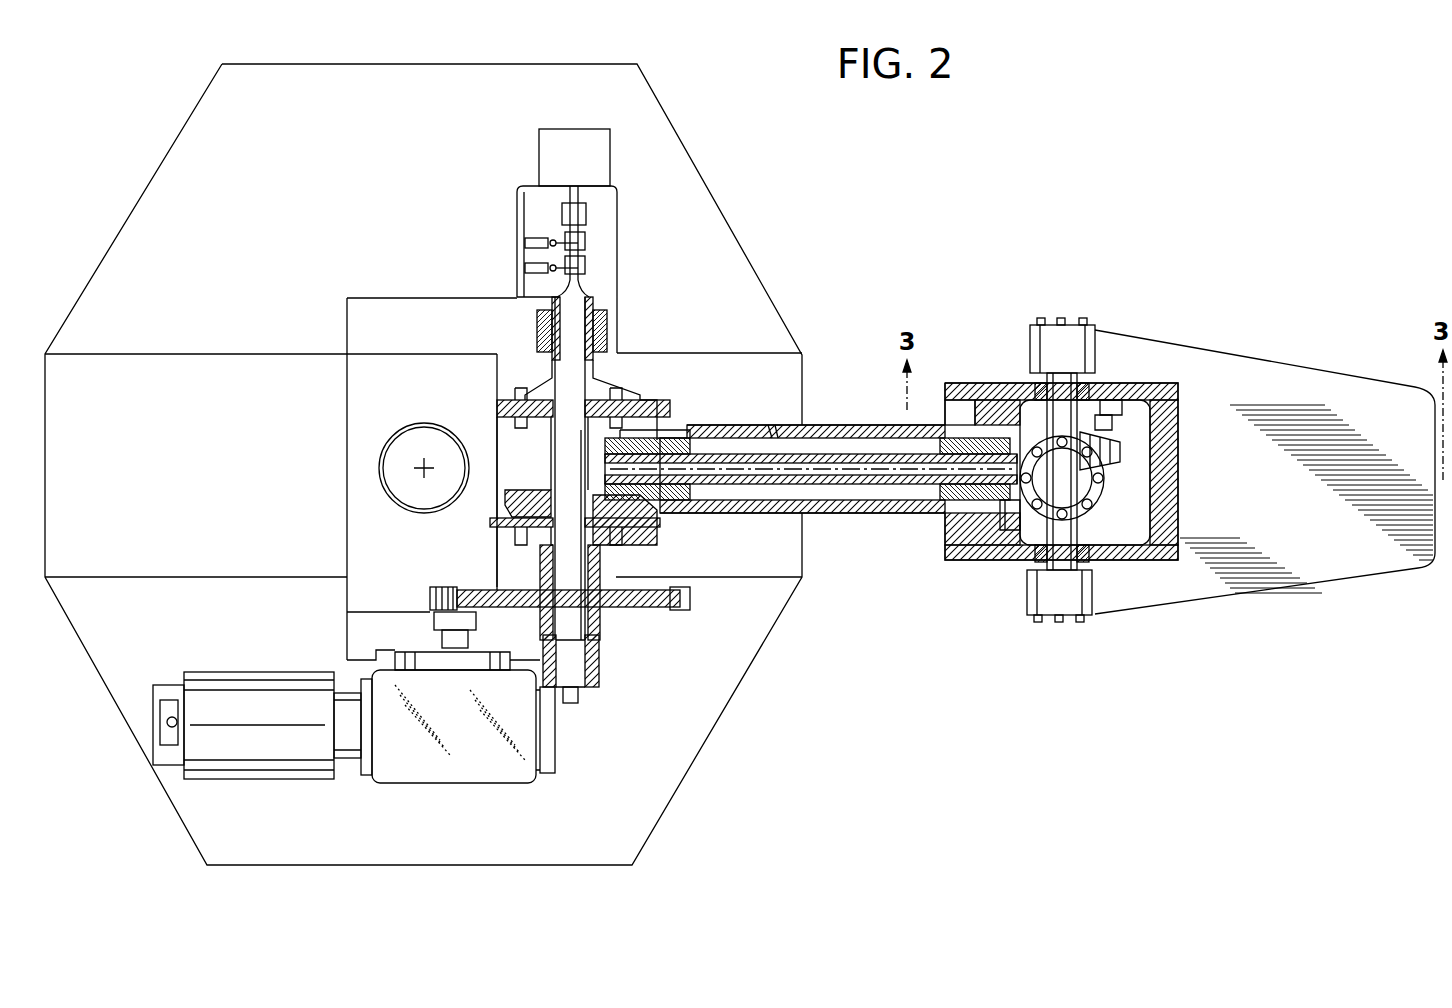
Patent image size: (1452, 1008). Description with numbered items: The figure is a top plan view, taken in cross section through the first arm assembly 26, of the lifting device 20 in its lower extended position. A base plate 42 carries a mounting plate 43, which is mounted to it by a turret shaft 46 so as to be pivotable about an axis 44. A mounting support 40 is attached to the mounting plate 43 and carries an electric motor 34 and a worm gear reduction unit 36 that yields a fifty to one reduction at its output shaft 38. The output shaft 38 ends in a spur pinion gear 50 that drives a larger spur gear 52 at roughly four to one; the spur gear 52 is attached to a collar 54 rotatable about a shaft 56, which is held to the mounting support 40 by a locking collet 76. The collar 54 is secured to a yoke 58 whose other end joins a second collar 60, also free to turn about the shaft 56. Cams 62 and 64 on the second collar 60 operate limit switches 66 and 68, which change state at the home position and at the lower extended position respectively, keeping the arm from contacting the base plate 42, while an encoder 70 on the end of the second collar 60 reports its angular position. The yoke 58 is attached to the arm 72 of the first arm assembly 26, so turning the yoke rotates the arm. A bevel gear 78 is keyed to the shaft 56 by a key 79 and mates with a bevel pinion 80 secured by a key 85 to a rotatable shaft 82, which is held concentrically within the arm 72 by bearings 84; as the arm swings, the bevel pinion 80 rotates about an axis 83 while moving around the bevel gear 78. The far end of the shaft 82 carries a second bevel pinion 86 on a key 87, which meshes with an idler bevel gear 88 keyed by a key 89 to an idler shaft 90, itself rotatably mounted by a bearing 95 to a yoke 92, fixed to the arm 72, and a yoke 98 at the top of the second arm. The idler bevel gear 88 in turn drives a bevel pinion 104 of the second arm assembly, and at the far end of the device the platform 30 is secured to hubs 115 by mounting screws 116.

The lifting device 20 is at (1085, 305).
The first arm assembly 26 is at (845, 425).
The platform 30 is at (1292, 382).
The electric motor 34 is at (232, 690).
The worm gear reduction unit 36 is at (528, 780).
The output shaft 38 is at (470, 631).
The mounting support 40 is at (352, 637).
The base plate 42 is at (462, 848).
The mounting plate 43 is at (350, 447).
The axis 44 is at (421, 464).
The turret shaft 46 is at (440, 432).
The spur pinion gear 50 is at (440, 588).
The spur gear 52 is at (676, 610).
The collar 54 is at (510, 562).
The shaft 56 is at (592, 550).
The yoke 58 is at (645, 540).
The second collar 60 is at (617, 362).
The cam 62 is at (588, 265).
The cam 64 is at (588, 241).
The limit switch 66 is at (525, 267).
The limit switch 68 is at (525, 241).
The encoder 70 is at (588, 211).
The arm 72 is at (718, 425).
The locking collet 76 is at (592, 676).
The bevel gear 78 is at (522, 490).
The key 79 is at (586, 518).
The bevel pinion 80 is at (632, 430).
The rotatable shaft 82 is at (758, 488).
The axis 83 is at (771, 428).
The bearings 84 is at (697, 500).
The key 85 is at (622, 446).
The second bevel pinion 86 is at (1008, 512).
The key 87 is at (985, 455).
The idler bevel gear 88 is at (1113, 450).
The key 89 is at (1102, 428).
The idler shaft 90 is at (1060, 556).
The yoke 92 is at (1182, 410).
The bearing 95 is at (1086, 376).
The yoke 98 is at (1112, 406).
The bevel pinion 104 is at (1092, 496).
The hubs 115 is at (1033, 349).
The mounting screws 116 is at (1083, 318).